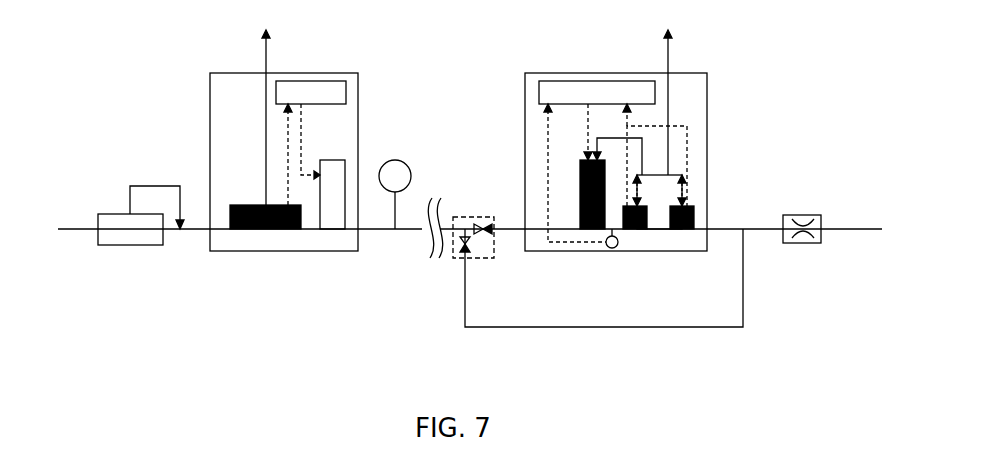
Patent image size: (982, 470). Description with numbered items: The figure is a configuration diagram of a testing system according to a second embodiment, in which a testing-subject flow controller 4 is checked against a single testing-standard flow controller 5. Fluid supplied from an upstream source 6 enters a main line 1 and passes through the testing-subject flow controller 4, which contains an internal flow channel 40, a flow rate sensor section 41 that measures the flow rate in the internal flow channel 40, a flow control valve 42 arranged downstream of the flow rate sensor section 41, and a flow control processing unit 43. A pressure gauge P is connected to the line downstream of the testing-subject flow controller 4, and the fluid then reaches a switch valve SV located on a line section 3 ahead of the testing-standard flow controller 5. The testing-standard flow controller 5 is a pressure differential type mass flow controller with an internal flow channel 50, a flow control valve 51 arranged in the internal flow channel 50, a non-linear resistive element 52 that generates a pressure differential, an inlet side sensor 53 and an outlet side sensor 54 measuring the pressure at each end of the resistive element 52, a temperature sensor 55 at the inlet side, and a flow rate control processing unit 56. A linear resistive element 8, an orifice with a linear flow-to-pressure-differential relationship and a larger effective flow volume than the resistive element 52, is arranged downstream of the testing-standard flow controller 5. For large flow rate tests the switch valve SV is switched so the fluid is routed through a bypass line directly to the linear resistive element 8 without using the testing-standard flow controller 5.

The exhaust gas passage 1 is at (190, 230).
The branch passage 3 is at (508, 227).
The testing-subject flow controller 4 is at (210, 73).
The testing-standard flow controller 5 is at (552, 72).
The gas source 6 is at (98, 214).
The linear resistive element 8 is at (800, 244).
The internal flow channel 40 is at (223, 230).
The flow rate sensor section 41 is at (243, 205).
The flow control valve 42 is at (333, 160).
The flow control processing unit 43 is at (327, 80).
The internal flow channel 50 is at (537, 230).
The flow control valve 51 is at (580, 160).
The resistive element 52 is at (657, 231).
The inlet side sensor 53 is at (630, 230).
The outlet side sensor 54 is at (681, 231).
The temperature sensor 55 is at (612, 248).
The flow rate control processing unit 56 is at (602, 80).
The switch valve SV is at (458, 260).
The pressure gauge P is at (395, 194).